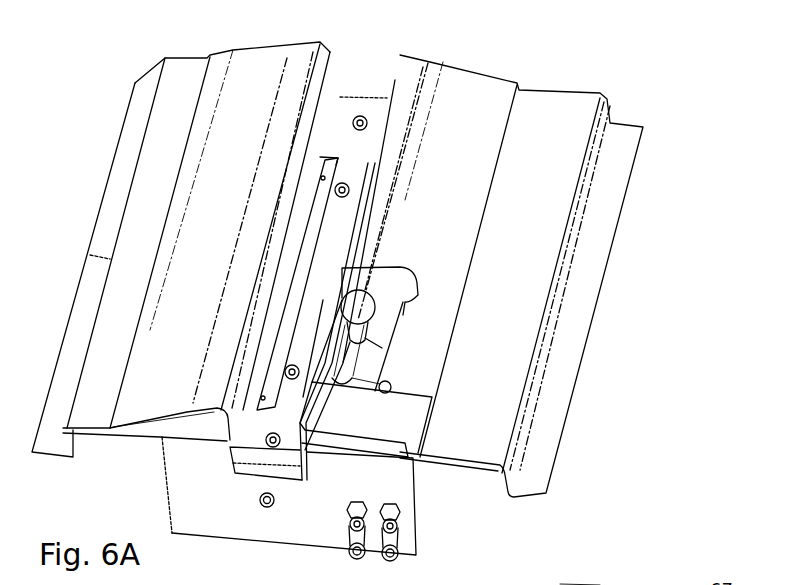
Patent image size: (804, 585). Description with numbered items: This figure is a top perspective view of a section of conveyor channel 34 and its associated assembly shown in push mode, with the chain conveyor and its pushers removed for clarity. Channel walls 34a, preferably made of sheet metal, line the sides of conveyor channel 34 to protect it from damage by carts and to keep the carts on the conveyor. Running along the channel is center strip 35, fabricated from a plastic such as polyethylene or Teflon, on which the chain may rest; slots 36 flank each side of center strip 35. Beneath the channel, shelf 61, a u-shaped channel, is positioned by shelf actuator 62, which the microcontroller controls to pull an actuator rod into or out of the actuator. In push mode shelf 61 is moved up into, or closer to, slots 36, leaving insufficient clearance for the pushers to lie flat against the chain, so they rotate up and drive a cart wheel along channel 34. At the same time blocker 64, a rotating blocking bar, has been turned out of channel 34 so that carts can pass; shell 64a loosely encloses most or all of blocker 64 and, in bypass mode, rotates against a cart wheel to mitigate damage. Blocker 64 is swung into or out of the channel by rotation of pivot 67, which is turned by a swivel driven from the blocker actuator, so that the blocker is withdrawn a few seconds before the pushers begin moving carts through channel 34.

The conveyor channel 34 is at (367, 66).
The channel walls 34a is at (267, 82).
The center strip 35 is at (340, 120).
The slots 36 is at (367, 163).
The shelf 61 is at (320, 300).
The shelf actuator 62 is at (562, 584).
The blocker 64 is at (357, 340).
The shell 64a is at (350, 360).
The pivot 67 is at (363, 300).